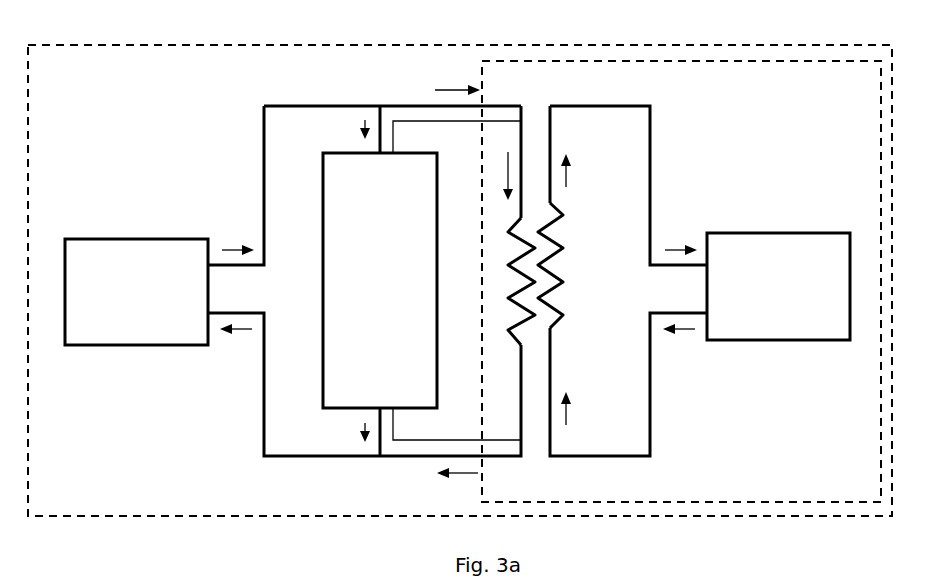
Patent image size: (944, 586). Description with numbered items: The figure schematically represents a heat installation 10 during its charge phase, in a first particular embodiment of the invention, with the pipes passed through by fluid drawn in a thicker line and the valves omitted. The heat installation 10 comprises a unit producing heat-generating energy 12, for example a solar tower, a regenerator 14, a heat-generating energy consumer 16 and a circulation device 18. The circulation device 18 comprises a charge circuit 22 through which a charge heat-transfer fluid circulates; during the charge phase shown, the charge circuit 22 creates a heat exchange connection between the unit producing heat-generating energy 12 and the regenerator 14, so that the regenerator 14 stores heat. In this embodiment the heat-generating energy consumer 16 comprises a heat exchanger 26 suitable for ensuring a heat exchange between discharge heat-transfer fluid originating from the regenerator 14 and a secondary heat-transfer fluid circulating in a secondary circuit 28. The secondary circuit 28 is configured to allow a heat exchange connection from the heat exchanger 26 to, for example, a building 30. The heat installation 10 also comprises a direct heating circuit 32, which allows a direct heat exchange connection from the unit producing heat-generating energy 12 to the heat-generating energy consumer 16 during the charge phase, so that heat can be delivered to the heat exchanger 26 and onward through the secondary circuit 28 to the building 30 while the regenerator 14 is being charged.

The heat installation 10 is at (767, 46).
The unit producing heat-generating energy 12 is at (136, 292).
The regenerator 14 is at (380, 280).
The heat-generating energy consumer 16 is at (669, 61).
The circulation device 18 is at (250, 96).
The charge circuit 22 is at (316, 96).
The heat exchanger 26 is at (553, 264).
The secondary circuit 28 is at (586, 96).
The building 30 is at (778, 286).
The direct heating circuit 32 is at (427, 106).